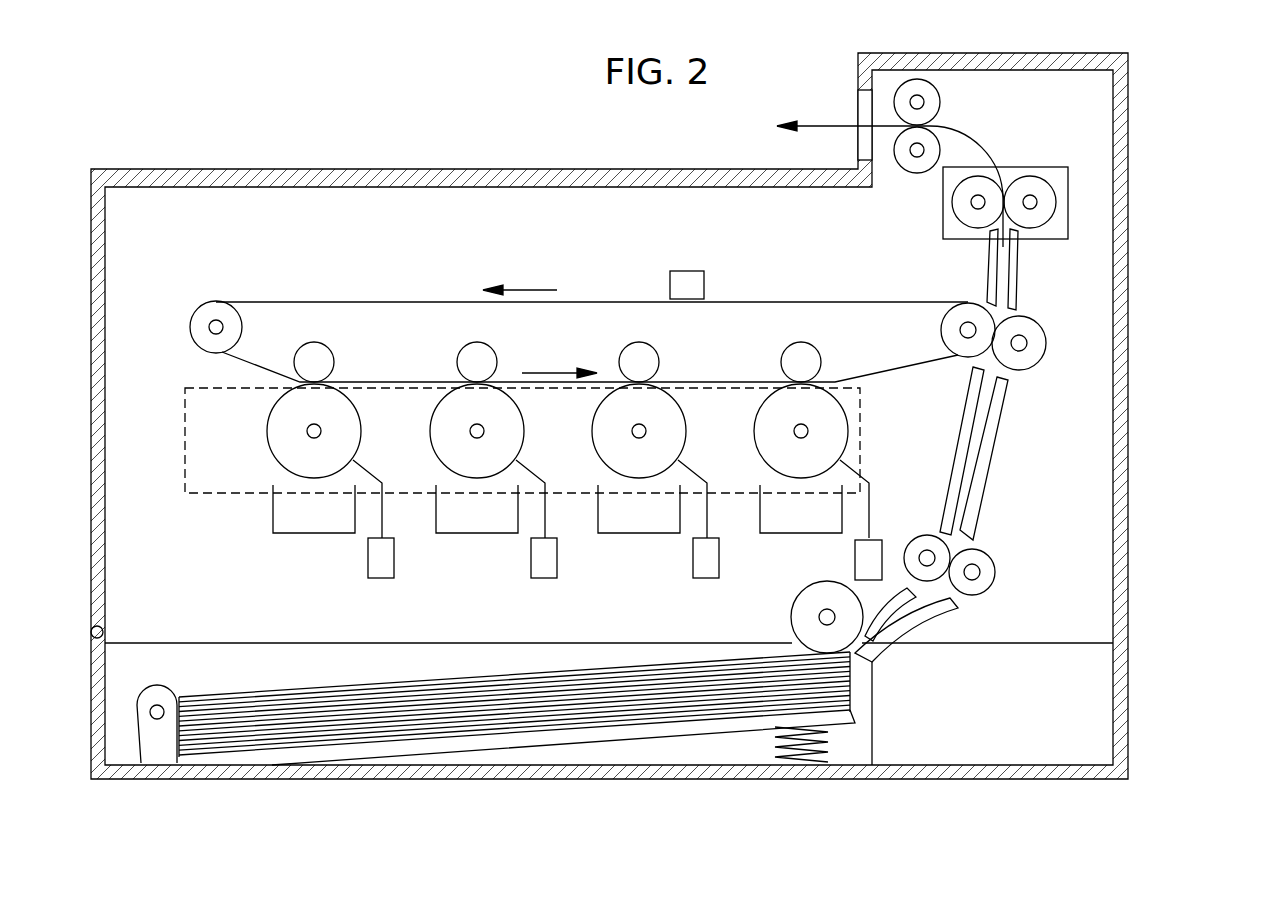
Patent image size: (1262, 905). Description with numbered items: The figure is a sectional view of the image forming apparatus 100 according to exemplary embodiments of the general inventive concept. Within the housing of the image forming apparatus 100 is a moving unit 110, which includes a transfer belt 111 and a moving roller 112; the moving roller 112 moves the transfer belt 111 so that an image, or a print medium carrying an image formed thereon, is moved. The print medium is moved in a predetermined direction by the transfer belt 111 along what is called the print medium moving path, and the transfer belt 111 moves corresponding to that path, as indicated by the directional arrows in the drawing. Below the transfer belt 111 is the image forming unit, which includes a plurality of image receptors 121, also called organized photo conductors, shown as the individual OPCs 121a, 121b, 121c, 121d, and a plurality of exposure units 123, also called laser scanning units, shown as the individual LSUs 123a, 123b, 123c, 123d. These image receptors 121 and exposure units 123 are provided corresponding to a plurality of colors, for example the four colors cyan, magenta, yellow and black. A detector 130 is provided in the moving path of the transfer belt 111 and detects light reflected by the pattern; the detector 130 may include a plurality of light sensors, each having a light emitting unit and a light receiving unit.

The image forming apparatus 100 is at (1193, 83).
The moving unit 110 is at (592, 225).
The transfer belt 111 is at (427, 300).
The moving roller 112 is at (314, 343).
The image receptors 121 is at (222, 495).
The organized photo conductor 121a is at (269, 447).
The organized photo conductor 121b is at (432, 447).
The organized photo conductor 121c is at (594, 447).
The organized photo conductor 121d is at (756, 447).
The exposure units 123 is at (631, 715).
The laser scanning unit 123a is at (384, 568).
The laser scanning unit 123b is at (547, 568).
The laser scanning unit 123c is at (709, 568).
The laser scanning unit 123d is at (874, 695).
The detector 130 is at (684, 280).